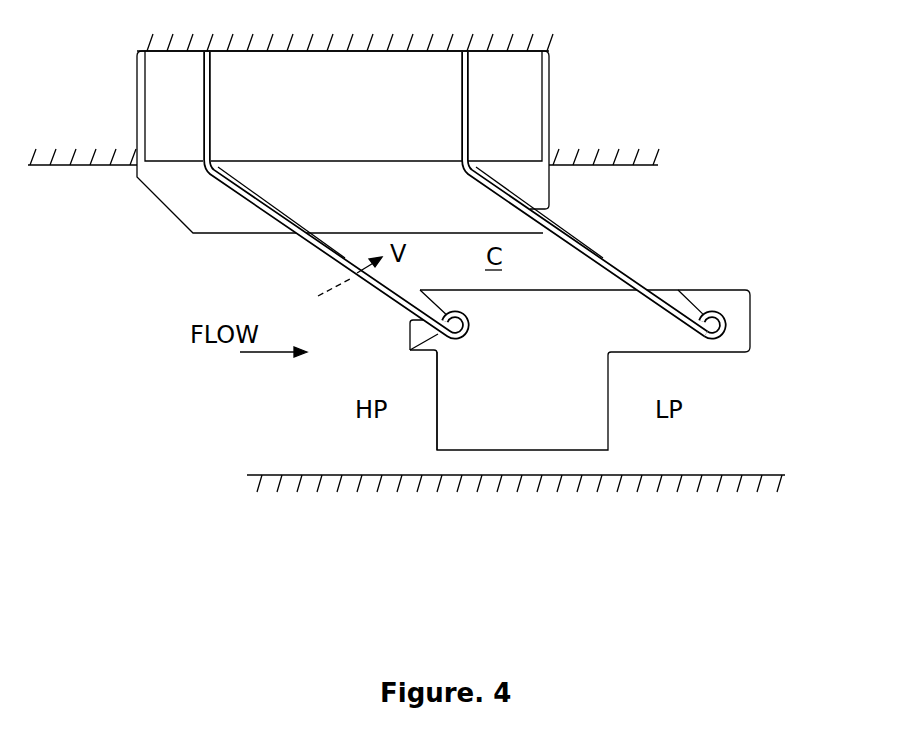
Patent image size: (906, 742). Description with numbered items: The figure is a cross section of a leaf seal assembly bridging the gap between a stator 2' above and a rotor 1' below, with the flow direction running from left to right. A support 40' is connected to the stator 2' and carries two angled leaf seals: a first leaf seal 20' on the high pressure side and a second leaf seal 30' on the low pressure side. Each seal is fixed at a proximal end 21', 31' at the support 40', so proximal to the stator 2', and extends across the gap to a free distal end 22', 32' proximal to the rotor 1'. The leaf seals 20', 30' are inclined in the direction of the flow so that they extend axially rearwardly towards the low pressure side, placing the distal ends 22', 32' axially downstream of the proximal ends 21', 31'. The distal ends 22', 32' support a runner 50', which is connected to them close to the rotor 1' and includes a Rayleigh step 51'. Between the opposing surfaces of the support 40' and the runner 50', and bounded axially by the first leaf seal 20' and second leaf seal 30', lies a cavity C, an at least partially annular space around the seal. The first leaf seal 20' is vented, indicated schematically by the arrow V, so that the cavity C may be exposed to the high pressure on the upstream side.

The rotor 1' is at (516, 505).
The stator 2' is at (343, 99).
The first leaf seal 20' is at (336, 194).
The proximal end 21' is at (271, 220).
The distal end 22' is at (391, 349).
The second leaf seal 30' is at (585, 193).
The proximal end 31' is at (552, 212).
The distal end 32' is at (749, 311).
The support 40' is at (343, 142).
The runner 50' is at (580, 370).
The Rayleigh step 51' is at (408, 405).